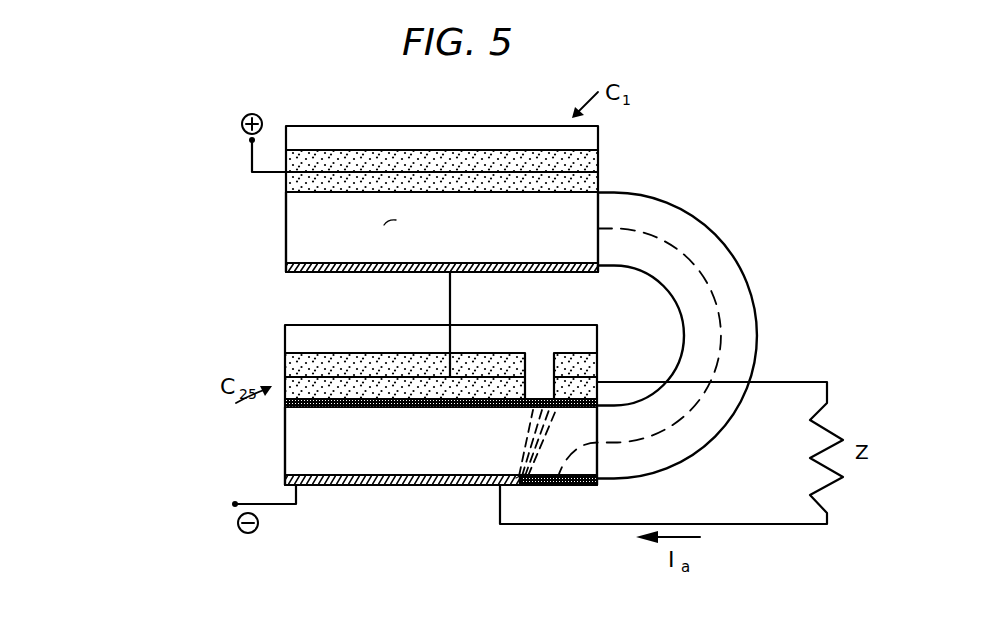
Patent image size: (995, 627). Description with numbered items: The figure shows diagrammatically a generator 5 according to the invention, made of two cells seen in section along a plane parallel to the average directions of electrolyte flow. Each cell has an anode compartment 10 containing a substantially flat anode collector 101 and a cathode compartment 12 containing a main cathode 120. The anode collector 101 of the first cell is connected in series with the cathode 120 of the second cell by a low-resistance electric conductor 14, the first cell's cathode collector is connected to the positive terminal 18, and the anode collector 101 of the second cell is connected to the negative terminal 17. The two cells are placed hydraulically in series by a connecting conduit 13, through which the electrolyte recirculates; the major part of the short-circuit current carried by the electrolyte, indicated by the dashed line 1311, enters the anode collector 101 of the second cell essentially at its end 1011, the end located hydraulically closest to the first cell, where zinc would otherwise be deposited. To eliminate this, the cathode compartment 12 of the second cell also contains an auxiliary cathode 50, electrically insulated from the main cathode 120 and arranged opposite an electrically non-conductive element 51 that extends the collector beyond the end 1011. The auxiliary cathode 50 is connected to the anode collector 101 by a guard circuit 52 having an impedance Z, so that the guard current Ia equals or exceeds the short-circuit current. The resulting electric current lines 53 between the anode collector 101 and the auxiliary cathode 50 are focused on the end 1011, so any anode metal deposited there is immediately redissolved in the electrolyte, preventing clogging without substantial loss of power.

The generator 5 is at (626, 158).
The anode compartment 10 is at (457, 229).
The anode collector 101 is at (331, 263).
The cathode compartment 12 is at (285, 345).
The cathode 120 is at (342, 353).
The auxiliary cathode 50 is at (554, 354).
The electrically non-conductive element 51 is at (560, 477).
The guard circuit 52 is at (782, 382).
The electric current lines 53 is at (560, 408).
The electric conductor 14 is at (450, 290).
The connecting conduit 13 is at (720, 238).
The dashed line 1311 is at (606, 443).
The end of the collector 1011 is at (520, 476).
The negative terminal 17 is at (235, 504).
The positive terminal 18 is at (249, 141).